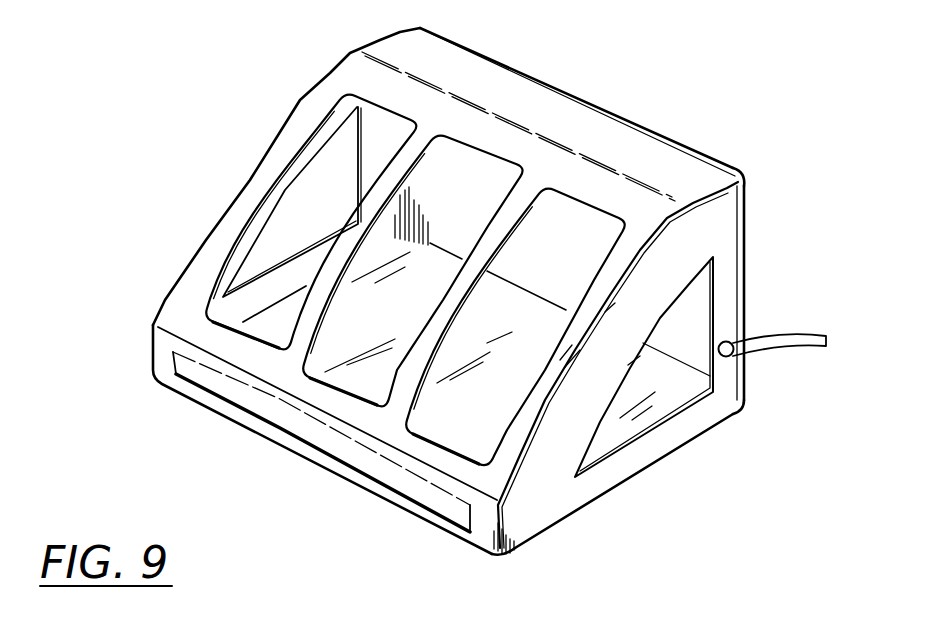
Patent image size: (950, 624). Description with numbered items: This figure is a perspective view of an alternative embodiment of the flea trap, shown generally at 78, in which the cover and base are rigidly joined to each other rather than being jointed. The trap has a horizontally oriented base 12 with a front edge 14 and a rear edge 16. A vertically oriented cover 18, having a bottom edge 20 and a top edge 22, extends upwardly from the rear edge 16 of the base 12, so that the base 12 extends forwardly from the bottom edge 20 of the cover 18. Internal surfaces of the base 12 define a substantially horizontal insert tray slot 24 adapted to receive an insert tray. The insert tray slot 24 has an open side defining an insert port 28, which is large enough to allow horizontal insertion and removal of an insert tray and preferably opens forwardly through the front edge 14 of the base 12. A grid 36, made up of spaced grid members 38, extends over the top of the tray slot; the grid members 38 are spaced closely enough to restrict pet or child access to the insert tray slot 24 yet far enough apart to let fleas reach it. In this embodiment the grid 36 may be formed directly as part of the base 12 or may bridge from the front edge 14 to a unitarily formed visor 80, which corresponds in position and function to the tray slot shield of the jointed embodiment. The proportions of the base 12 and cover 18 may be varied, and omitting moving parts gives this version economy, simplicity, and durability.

The base 12 is at (637, 473).
The front edge 14 is at (500, 557).
The rear edge 16 is at (723, 415).
The cover 18 is at (747, 283).
The bottom edge 20 is at (743, 385).
The top edge 22 is at (747, 180).
The insert tray slot 24 is at (217, 396).
The insert port 28 is at (297, 440).
The grid 36 is at (347, 220).
The grid members 38 is at (297, 307).
The flea trap embodiment 78 is at (632, 104).
The unitarily formed visor 80 is at (382, 41).